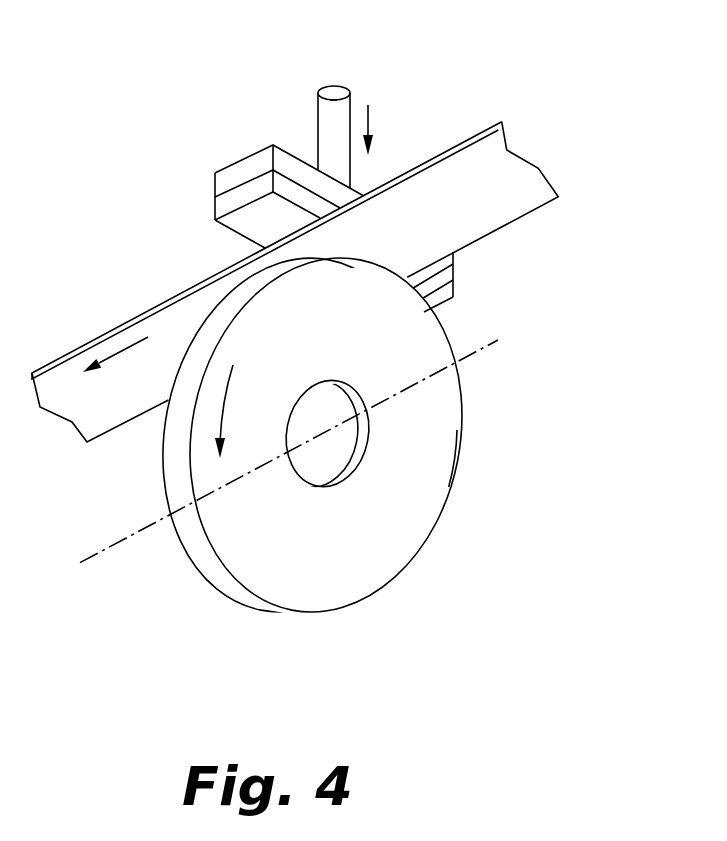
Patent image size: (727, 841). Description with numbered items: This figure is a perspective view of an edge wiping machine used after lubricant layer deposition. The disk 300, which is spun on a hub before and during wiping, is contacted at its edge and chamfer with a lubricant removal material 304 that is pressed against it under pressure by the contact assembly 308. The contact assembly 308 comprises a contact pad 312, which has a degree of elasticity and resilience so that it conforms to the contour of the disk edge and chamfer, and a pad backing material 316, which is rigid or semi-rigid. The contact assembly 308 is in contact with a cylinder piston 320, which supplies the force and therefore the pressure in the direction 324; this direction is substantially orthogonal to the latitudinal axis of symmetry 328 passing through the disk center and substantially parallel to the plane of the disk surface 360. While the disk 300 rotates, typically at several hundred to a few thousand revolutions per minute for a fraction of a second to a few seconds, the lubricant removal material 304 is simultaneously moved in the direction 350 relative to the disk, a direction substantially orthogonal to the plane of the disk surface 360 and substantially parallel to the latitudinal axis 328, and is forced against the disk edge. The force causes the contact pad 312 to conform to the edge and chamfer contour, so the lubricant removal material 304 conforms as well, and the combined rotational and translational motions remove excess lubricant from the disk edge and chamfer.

The disk 300 is at (412, 553).
The lubricant removal material 304 is at (530, 211).
The contact assembly 308 is at (237, 97).
The contact pad 312 is at (217, 218).
The pad backing material 316 is at (216, 173).
The cylinder piston 320 is at (348, 90).
The direction of force 324 is at (368, 118).
The latitudinal axis of symmetry 328 is at (470, 358).
The direction of lubricant removal material motion 350 is at (127, 350).
The disk surface 360 is at (442, 487).